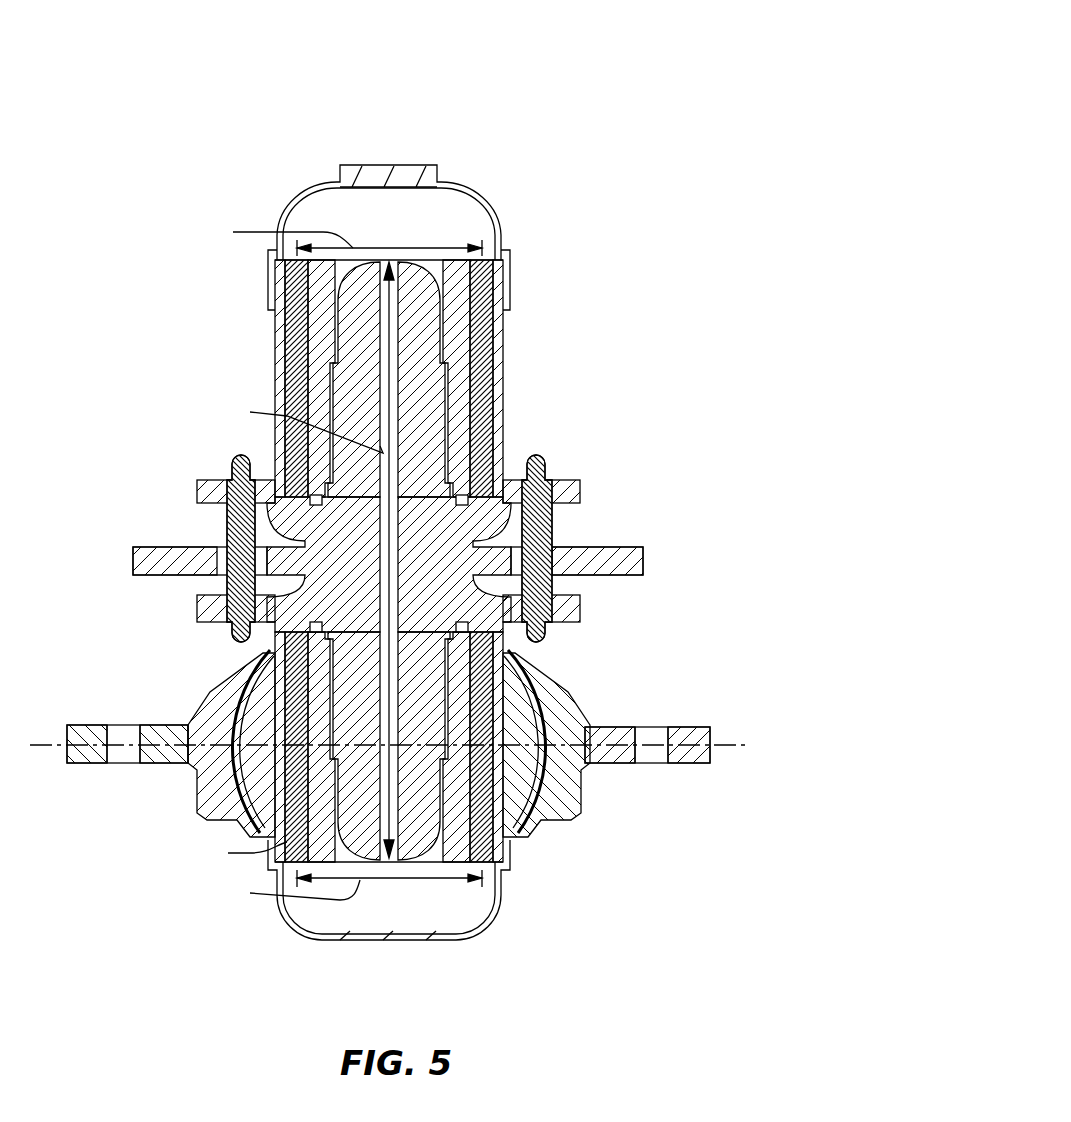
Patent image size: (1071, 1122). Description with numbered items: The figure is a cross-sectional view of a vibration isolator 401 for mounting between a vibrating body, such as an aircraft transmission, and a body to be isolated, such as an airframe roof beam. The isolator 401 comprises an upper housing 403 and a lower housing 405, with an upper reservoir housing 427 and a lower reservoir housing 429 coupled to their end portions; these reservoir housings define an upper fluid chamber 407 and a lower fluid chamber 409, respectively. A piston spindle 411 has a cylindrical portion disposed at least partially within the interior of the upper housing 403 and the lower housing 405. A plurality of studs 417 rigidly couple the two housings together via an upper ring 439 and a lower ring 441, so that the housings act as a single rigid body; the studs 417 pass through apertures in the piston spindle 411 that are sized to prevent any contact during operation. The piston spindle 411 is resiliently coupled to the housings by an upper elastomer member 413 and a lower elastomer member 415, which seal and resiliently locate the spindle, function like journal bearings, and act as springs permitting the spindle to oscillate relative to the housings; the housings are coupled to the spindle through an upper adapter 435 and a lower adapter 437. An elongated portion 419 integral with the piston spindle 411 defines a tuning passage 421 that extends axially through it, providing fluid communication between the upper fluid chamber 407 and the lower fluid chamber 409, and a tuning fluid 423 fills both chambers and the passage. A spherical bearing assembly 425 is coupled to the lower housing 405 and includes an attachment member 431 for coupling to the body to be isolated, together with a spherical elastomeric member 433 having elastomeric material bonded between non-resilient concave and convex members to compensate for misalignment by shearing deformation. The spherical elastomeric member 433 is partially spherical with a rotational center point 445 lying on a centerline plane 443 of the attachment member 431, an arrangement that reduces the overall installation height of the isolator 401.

The vibration isolator 401 is at (675, 92).
The upper housing 403 is at (505, 408).
The lower housing 405 is at (532, 820).
The upper fluid chamber 407 is at (470, 217).
The lower fluid chamber 409 is at (467, 895).
The piston spindle 411 is at (643, 568).
The upper elastomer member 413 is at (296, 375).
The lower elastomer member 415 is at (503, 868).
The studs 417 is at (227, 533).
The elongated portion 419 is at (440, 775).
The tuning passage 421 is at (392, 360).
The tuning fluid 423 is at (320, 207).
The spherical bearing assembly 425 is at (578, 688).
The upper reservoir housing 427 is at (415, 165).
The lower reservoir housing 429 is at (463, 938).
The attachment member 431 is at (702, 727).
The spherical elastomeric member 433 is at (243, 724).
The upper adapter 435 is at (497, 295).
The lower adapter 437 is at (323, 753).
The upper ring 439 is at (580, 481).
The lower ring 441 is at (580, 614).
The centerline plane 443 is at (750, 747).
The rotational center point 445 is at (383, 745).